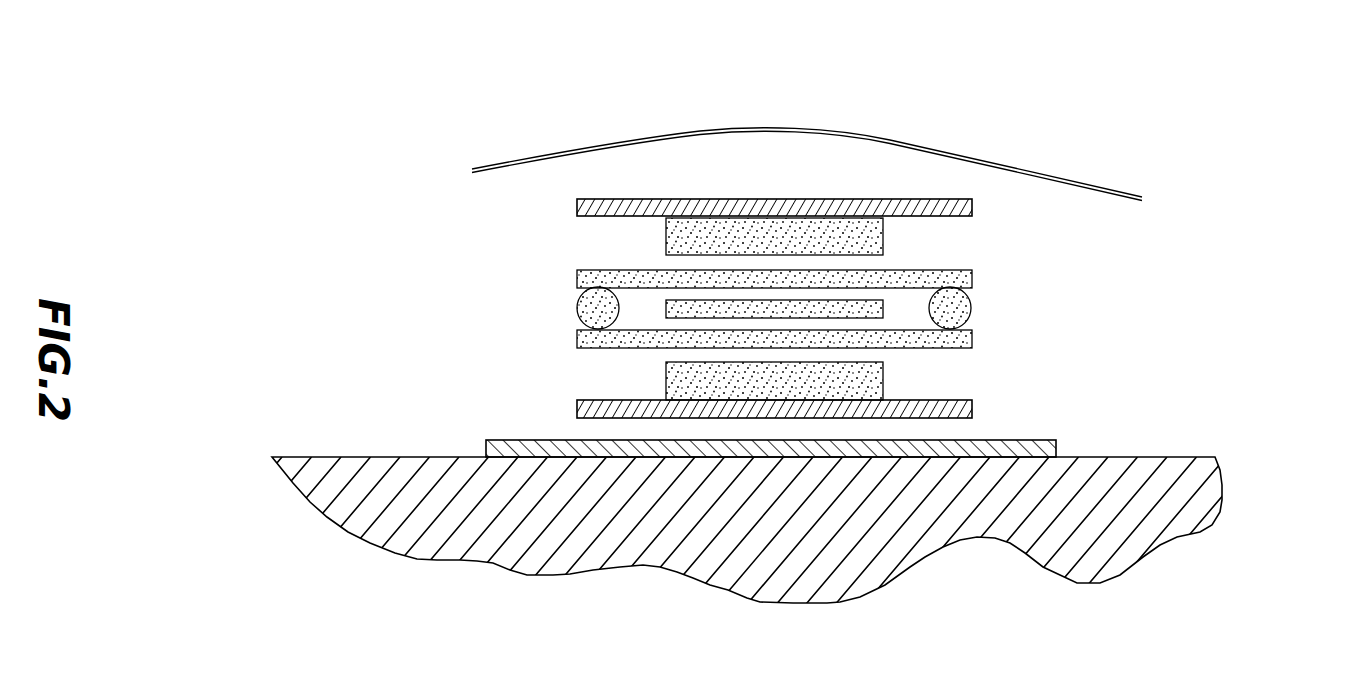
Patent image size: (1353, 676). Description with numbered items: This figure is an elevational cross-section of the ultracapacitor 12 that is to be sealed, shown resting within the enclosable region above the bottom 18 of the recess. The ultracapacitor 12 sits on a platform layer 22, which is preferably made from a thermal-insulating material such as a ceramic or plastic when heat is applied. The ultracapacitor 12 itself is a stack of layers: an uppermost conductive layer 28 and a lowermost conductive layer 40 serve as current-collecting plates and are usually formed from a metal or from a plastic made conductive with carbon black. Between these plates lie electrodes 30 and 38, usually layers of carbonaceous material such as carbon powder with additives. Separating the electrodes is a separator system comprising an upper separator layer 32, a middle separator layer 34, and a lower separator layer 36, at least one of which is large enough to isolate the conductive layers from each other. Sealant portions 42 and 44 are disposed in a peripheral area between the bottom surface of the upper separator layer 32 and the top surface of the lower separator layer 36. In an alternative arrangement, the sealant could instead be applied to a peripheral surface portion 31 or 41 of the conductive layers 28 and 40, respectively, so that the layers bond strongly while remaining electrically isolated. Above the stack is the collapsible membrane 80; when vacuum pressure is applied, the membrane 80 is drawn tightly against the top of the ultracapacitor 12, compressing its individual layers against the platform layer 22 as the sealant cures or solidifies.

The ultracapacitor 12 is at (1123, 314).
The bottom 18 is at (1155, 459).
The platform layer 22 is at (1057, 442).
The uppermost conductive layer 28 is at (960, 199).
The electrode 30 is at (883, 238).
The peripheral surface portion 31 is at (637, 217).
The upper separator layer 32 is at (972, 280).
The middle separator layer 34 is at (883, 309).
The lower separator layer 36 is at (972, 342).
The electrode 38 is at (883, 382).
The lowermost conductive layer 40 is at (973, 412).
The peripheral surface portion 41 is at (615, 400).
The sealant portion 42 is at (972, 310).
The sealant portion 44 is at (578, 308).
The collapsible membrane 80 is at (845, 132).